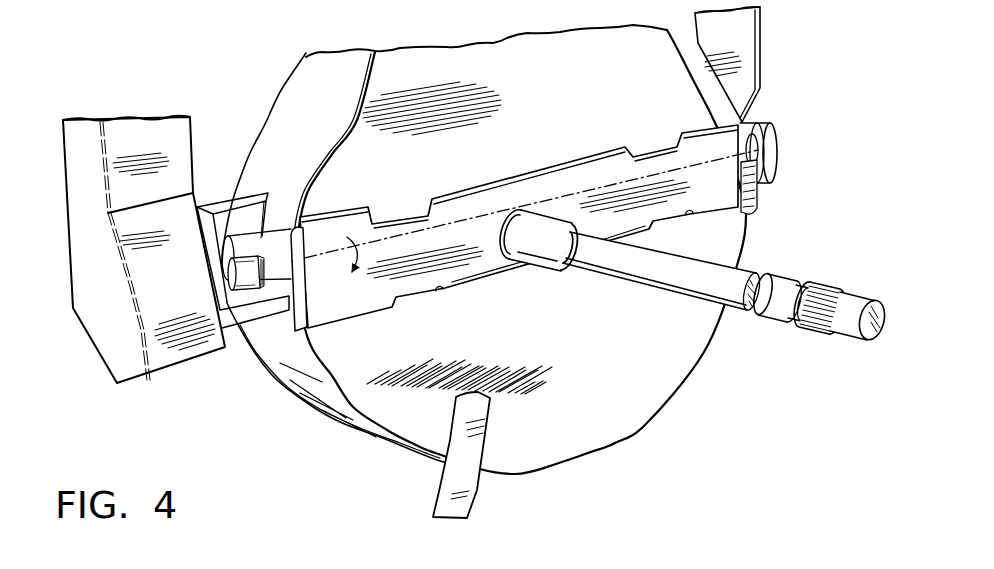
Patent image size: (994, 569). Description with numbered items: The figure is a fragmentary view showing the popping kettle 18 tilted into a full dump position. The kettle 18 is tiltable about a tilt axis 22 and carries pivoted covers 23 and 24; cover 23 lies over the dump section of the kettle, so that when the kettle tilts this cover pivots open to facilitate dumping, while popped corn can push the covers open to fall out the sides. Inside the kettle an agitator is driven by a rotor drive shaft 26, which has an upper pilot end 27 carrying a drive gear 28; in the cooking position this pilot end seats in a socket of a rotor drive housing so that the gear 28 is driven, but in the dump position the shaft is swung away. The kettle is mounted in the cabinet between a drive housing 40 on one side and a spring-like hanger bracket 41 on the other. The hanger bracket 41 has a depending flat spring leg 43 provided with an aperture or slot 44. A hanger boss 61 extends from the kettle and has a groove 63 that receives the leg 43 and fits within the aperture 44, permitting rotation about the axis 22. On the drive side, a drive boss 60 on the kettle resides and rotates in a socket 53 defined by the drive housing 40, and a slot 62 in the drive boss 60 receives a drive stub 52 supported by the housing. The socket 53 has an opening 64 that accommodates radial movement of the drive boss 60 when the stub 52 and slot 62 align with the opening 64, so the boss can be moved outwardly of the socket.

The popping kettle 18 is at (290, 417).
The tilt axis 22 is at (478, 215).
The cover 23 is at (575, 372).
The cover 24 is at (586, 94).
The rotor drive shaft 26 is at (686, 285).
The upper pilot end 27 is at (860, 300).
The drive gear 28 is at (820, 330).
The drive housing 40 is at (135, 144).
The spring-like hanger bracket 41 is at (766, 40).
The depending flat spring leg 43 is at (735, 43).
The aperture or slot 44 is at (757, 190).
The drive stub 52 is at (232, 279).
The socket 53 is at (224, 218).
The drive boss 60 is at (270, 228).
The hanger boss 61 is at (780, 133).
The slot 62 is at (264, 273).
The groove 63 is at (758, 147).
The opening 64 is at (253, 226).